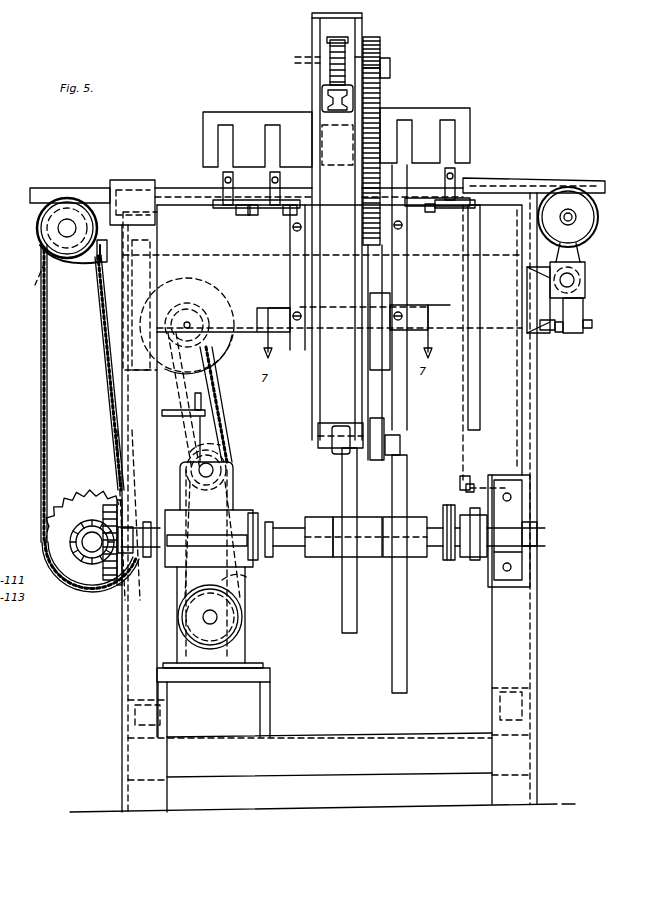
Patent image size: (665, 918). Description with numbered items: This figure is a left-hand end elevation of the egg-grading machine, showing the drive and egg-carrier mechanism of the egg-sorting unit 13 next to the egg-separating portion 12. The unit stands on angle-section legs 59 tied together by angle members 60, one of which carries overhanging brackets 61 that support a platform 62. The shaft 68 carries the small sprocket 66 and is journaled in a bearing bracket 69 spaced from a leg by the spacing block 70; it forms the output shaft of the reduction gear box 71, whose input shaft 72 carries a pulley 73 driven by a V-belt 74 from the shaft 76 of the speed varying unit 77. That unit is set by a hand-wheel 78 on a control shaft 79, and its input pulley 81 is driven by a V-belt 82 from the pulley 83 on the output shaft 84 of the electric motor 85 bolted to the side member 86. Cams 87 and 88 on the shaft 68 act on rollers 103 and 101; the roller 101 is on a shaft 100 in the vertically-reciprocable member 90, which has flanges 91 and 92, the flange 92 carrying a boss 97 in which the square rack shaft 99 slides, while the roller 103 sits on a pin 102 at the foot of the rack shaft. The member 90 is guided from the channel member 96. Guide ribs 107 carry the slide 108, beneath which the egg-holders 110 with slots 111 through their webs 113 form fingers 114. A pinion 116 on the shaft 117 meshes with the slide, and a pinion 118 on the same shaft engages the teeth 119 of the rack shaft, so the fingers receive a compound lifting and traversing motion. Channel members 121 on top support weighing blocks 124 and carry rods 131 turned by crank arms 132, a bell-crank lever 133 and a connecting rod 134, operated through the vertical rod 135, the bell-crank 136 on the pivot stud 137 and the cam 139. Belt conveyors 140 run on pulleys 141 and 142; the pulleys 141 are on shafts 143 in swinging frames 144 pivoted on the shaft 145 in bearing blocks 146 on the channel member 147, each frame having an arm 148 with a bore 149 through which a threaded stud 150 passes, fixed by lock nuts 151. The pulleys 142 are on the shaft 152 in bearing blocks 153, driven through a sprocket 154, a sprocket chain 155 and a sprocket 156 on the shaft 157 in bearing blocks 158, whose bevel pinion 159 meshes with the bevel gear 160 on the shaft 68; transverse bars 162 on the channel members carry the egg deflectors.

The egg-separating portion 12 is at (7, 645).
The egg-sorting unit 13 is at (489, 122).
The legs 59 is at (135, 678).
The angle members 60 is at (128, 712).
The brackets 61 is at (167, 710).
The platform 62 is at (262, 673).
The small sprocket 66 is at (452, 562).
The shaft 68 is at (558, 533).
The bearing bracket 69 is at (522, 552).
The spacing block 70 is at (522, 475).
The reduction gear box 71 is at (240, 492).
The input shaft 72 is at (218, 620).
The pulley 73 is at (240, 596).
The V-belt 74 is at (250, 578).
The shaft 76 is at (227, 466).
The speed varying unit 77 is at (203, 430).
The hand-wheel 78 is at (188, 400).
The control shaft 79 is at (205, 413).
The input pulley 81 is at (222, 442).
The V-belt 82 is at (218, 382).
The pulley 83 is at (186, 340).
The output shaft 84 is at (222, 302).
The electric motor 85 is at (222, 348).
The side member 86 is at (168, 258).
The cam 87 is at (407, 624).
The cam 88 is at (357, 630).
The vertically-reciprocable member 90 is at (304, 30).
The flange 91 is at (320, 362).
The flange 92 is at (366, 352).
The channel member 96 is at (252, 320).
The boss 97 is at (390, 362).
The rack shaft 99 is at (383, 100).
The shaft 100 is at (330, 448).
The roller 101 is at (340, 426).
The pin 102 is at (400, 442).
The roller 103 is at (386, 440).
The guide ribs 107 is at (322, 100).
The slide 108 is at (337, 112).
The egg-holders 110 is at (230, 108).
The slots 111 is at (222, 136).
The webs 113 is at (215, 150).
The fingers 114 is at (246, 167).
The pinion 116 is at (336, 37).
The shaft 117 is at (318, 62).
The pinion 118 is at (382, 50).
The teeth 119 is at (385, 106).
The channel members 121 is at (213, 206).
The blocks 124 is at (223, 180).
The rod 131 is at (242, 215).
The crank arm 132 is at (233, 200).
The bell-crank lever 133 is at (505, 178).
The connecting rod 134 is at (252, 215).
The vertical rod 135 is at (463, 402).
The bell-crank 136 is at (460, 482).
The pivot stud 137 is at (466, 490).
The cam 139 is at (478, 560).
The belt conveyor 140 is at (172, 195).
The pulleys 141 is at (588, 217).
The pulleys 142 is at (48, 256).
The shafts 143 is at (577, 214).
The swinging frames 144 is at (580, 252).
The shaft 145 is at (575, 278).
The bearing blocks 146 is at (586, 288).
The channel member 147 is at (527, 302).
The arm 148 is at (583, 308).
The bore 149 is at (570, 333).
The threaded studs 150 is at (556, 333).
The lock nuts 151 is at (592, 324).
The shaft 152 is at (58, 226).
The bearing blocks 153 is at (52, 236).
The sprocket 154 is at (29, 277).
The sprocket chain 155 is at (41, 418).
The sprocket 156 is at (72, 496).
The shaft 157 is at (82, 540).
The bearing blocks 158 is at (108, 505).
The bevel pinion 159 is at (80, 556).
The bevel gear 160 is at (117, 580).
The transverse bars 162 is at (55, 188).